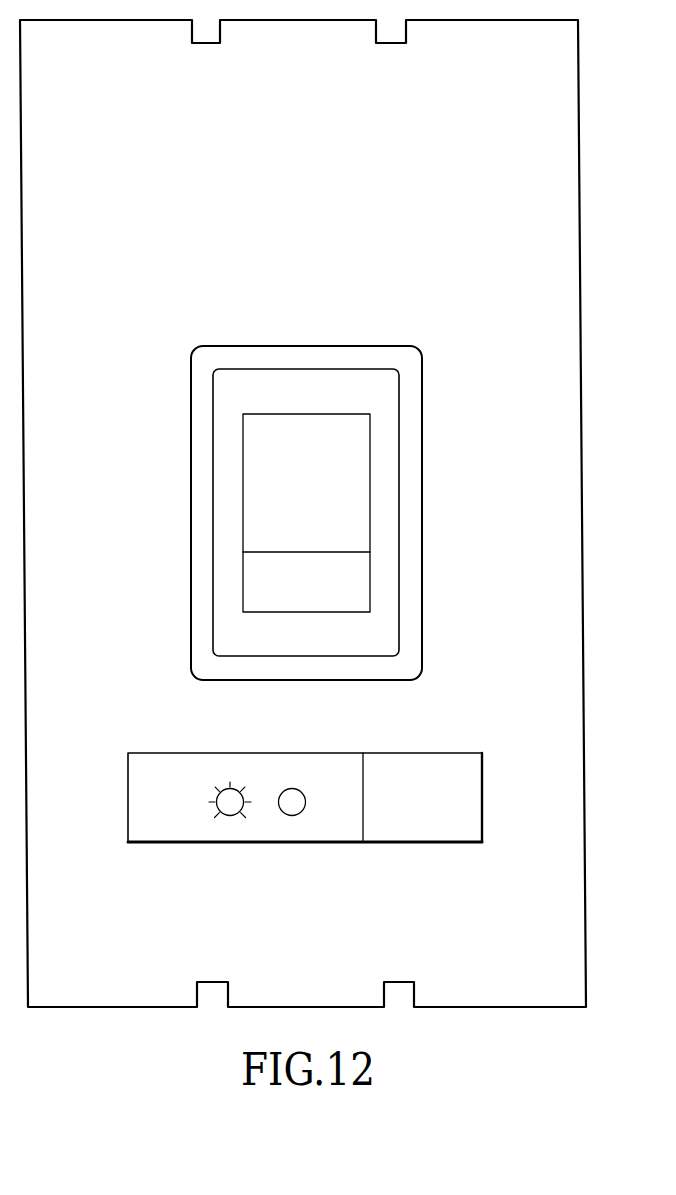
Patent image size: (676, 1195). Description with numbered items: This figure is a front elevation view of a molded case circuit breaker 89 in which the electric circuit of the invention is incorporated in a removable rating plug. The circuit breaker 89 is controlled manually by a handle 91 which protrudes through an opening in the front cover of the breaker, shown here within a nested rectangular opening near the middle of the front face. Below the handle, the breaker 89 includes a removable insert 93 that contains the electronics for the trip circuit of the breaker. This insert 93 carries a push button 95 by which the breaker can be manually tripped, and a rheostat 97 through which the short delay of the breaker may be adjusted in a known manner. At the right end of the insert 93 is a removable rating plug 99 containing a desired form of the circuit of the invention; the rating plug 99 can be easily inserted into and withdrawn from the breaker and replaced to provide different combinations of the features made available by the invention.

The circuit breaker 89 is at (582, 562).
The handle 91 is at (370, 578).
The removable insert 93 is at (177, 753).
The push button 95 is at (300, 788).
The rheostat 97 is at (224, 789).
The removable rating plug 99 is at (415, 753).